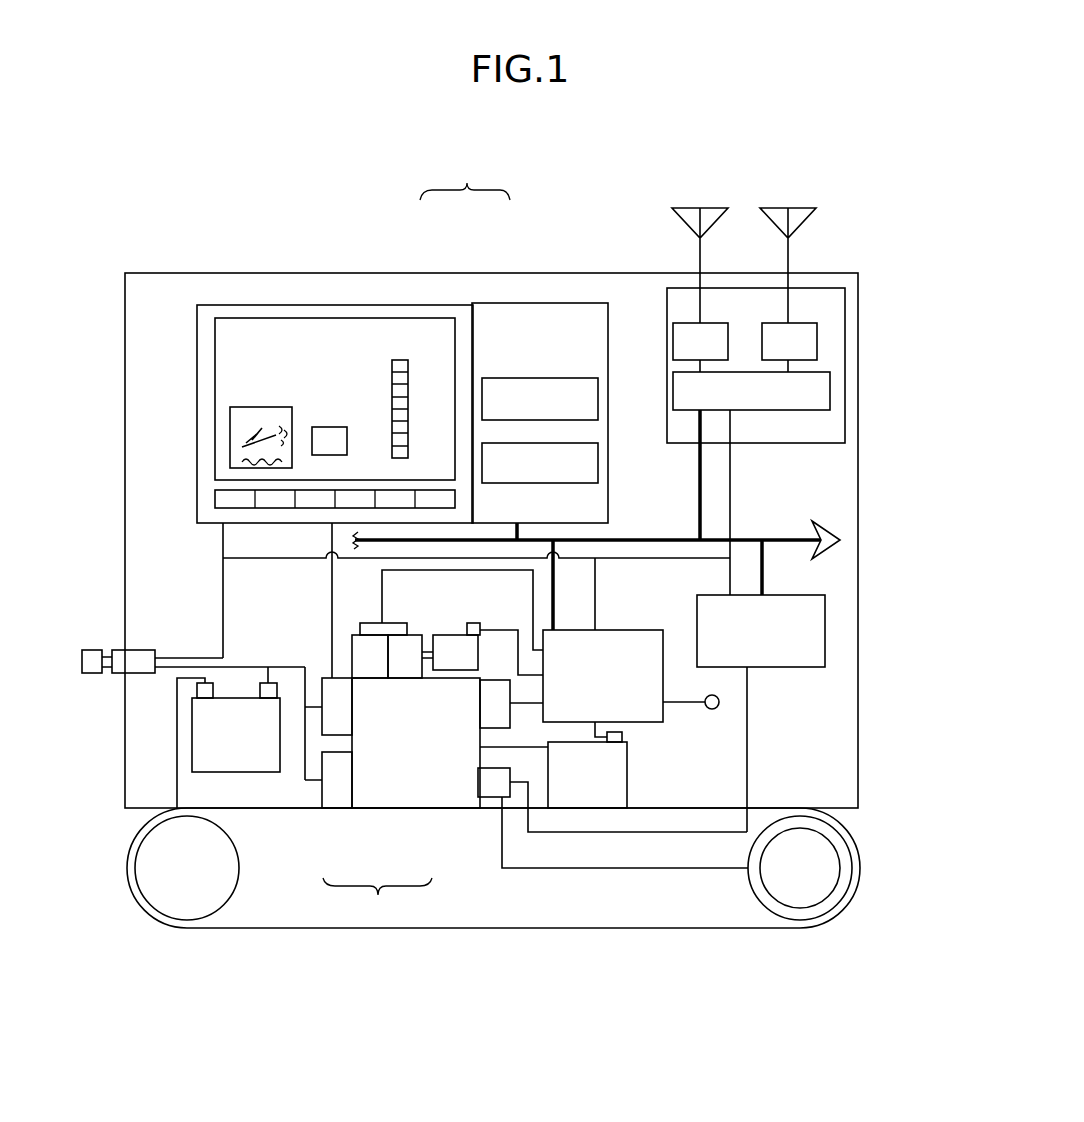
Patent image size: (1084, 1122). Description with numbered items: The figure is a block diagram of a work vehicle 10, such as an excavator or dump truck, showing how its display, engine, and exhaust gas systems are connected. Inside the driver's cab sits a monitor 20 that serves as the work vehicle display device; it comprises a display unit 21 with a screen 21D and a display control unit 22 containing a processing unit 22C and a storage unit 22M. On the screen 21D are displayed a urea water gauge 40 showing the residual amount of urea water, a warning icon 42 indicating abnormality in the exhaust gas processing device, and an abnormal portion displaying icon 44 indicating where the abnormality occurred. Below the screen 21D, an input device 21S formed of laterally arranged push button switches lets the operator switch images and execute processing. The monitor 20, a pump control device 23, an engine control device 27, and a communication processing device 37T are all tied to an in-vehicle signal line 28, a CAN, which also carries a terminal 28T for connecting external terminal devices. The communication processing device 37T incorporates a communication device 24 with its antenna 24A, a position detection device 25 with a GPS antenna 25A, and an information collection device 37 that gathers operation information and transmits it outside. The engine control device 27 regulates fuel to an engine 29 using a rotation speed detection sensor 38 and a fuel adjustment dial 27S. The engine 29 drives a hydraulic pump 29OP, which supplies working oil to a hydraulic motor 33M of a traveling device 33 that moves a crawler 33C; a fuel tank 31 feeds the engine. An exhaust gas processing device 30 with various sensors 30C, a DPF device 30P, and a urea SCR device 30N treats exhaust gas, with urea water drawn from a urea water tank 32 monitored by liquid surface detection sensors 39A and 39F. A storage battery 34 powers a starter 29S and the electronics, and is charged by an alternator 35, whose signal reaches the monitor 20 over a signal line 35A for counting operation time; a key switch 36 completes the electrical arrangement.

The work vehicle 10 is at (300, 273).
The monitor 20 is at (465, 180).
The display unit 21 is at (410, 305).
The screen 21D is at (237, 318).
The input device 21S is at (212, 495).
The display control unit 22 is at (515, 305).
The processing unit 22C is at (598, 396).
The storage unit 22M is at (598, 460).
The pump control device 23 is at (826, 640).
The communication device 24 is at (800, 323).
The antenna 24A is at (768, 212).
The position detection device 25 is at (710, 323).
The GPS antenna 25A is at (680, 212).
The engine control device 27 is at (625, 630).
The fuel adjustment dial 27S is at (713, 709).
The in-vehicle signal line 28 is at (640, 532).
The terminal 28T is at (842, 540).
The engine 29 is at (455, 800).
The hydraulic pump 29OP is at (490, 785).
The starter 29S is at (338, 806).
The exhaust gas processing device 30 is at (377, 900).
The various sensors 30C is at (366, 623).
The diesel particulate filter (DPF) device 30P is at (372, 680).
The urea SCR device 30N is at (400, 680).
The fuel tank 31 is at (627, 780).
The urea water tank 32 is at (447, 650).
The traveling device 33 is at (563, 928).
The crawler 33C is at (680, 928).
The hydraulic motor 33M is at (818, 872).
The storage battery 34 is at (236, 772).
The alternator 35 is at (330, 722).
The signal line 35A is at (332, 600).
The key switch 36 is at (118, 675).
The information collection device 37 is at (790, 410).
The communication processing device 37T is at (848, 322).
The rotation speed detection sensor 38 is at (492, 690).
The liquid surface detection sensor 39A is at (475, 620).
The liquid surface detection sensor 39F is at (622, 737).
The urea water gauge 40 is at (392, 376).
The warning icon 42 is at (330, 427).
The abnormal portion displaying icon 44 is at (265, 407).